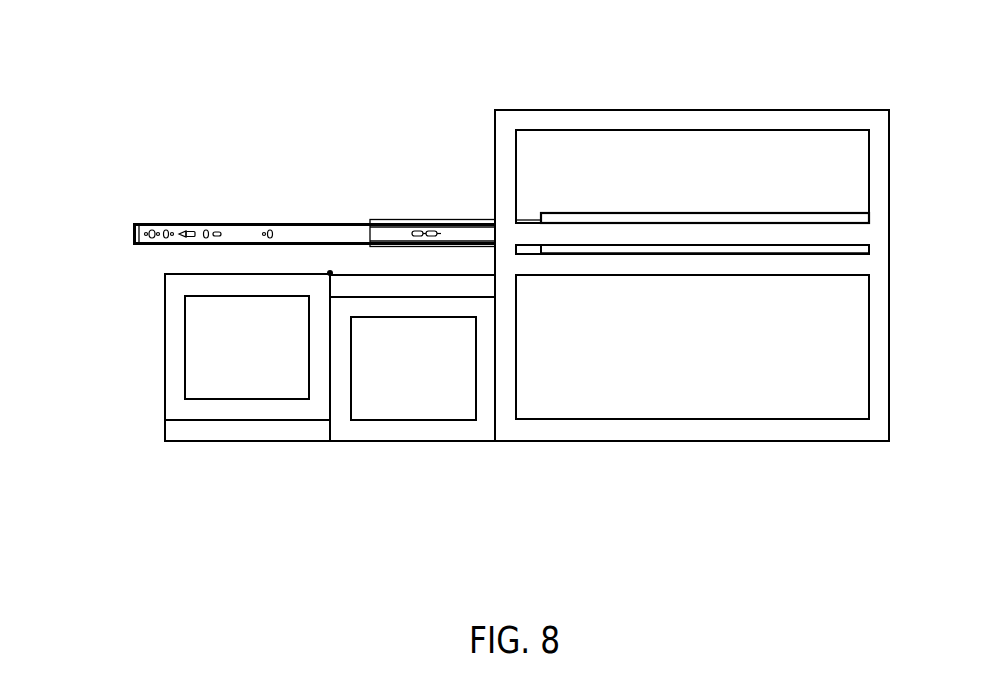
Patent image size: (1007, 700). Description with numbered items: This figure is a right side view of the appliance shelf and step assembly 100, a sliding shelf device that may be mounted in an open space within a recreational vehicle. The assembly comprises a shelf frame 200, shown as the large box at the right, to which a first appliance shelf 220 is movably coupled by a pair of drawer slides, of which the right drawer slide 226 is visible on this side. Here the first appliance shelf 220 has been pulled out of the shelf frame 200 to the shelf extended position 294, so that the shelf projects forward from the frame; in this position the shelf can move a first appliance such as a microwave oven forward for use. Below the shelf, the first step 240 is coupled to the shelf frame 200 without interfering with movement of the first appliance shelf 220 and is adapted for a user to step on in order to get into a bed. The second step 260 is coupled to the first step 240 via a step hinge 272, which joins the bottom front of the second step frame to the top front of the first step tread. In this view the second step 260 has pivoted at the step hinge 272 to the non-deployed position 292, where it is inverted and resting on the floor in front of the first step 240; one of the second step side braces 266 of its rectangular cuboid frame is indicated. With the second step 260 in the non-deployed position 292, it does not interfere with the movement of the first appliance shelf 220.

The appliance shelf and step assembly 100 is at (150, 167).
The shelf frame 200 is at (889, 167).
The first appliance shelf 220 is at (133, 229).
The right drawer slide 226 is at (449, 224).
The first step 240 is at (496, 455).
The second step 260 is at (330, 455).
The second step side brace 266 is at (318, 342).
The step hinge 272 is at (330, 272).
The non-deployed position 292 is at (150, 350).
The shelf extended position 294 is at (320, 178).